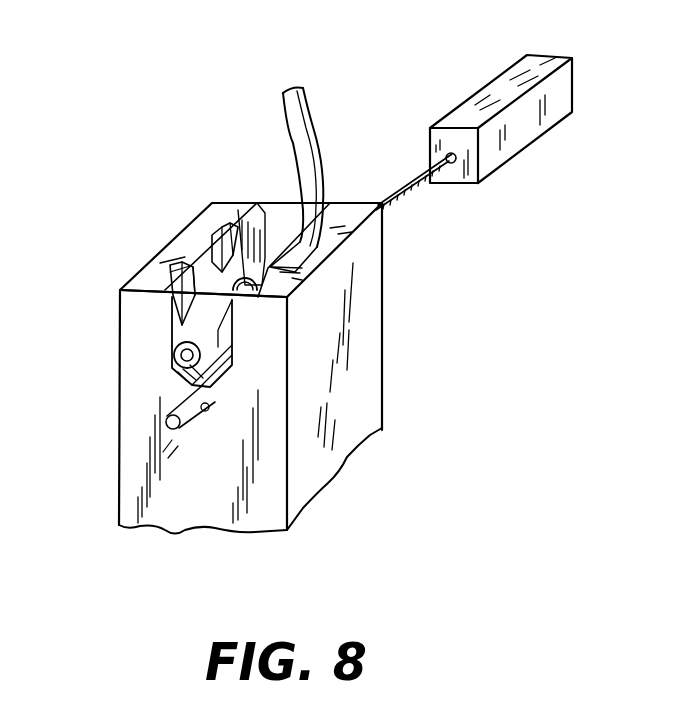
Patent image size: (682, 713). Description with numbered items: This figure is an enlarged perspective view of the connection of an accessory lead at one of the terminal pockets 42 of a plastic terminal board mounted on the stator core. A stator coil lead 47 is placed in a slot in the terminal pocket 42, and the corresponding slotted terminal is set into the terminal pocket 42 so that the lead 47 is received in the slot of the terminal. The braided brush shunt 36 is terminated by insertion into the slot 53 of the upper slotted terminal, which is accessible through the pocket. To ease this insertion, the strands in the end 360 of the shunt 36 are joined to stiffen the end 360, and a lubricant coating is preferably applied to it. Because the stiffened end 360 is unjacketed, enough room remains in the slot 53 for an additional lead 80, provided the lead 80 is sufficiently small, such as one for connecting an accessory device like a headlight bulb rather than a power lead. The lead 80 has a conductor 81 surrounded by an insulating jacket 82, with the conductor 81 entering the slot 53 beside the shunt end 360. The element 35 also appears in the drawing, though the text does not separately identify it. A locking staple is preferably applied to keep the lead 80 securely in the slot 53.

The connector block 35 is at (517, 137).
The brush shunt 36 is at (413, 178).
The terminal pocket 42 is at (380, 307).
The stator coil lead 47 is at (175, 430).
The slot 53 is at (172, 428).
The lead 80 is at (316, 128).
The conductor 81 is at (172, 367).
The insulating jacket 82 is at (178, 337).
The end 360 is at (163, 405).